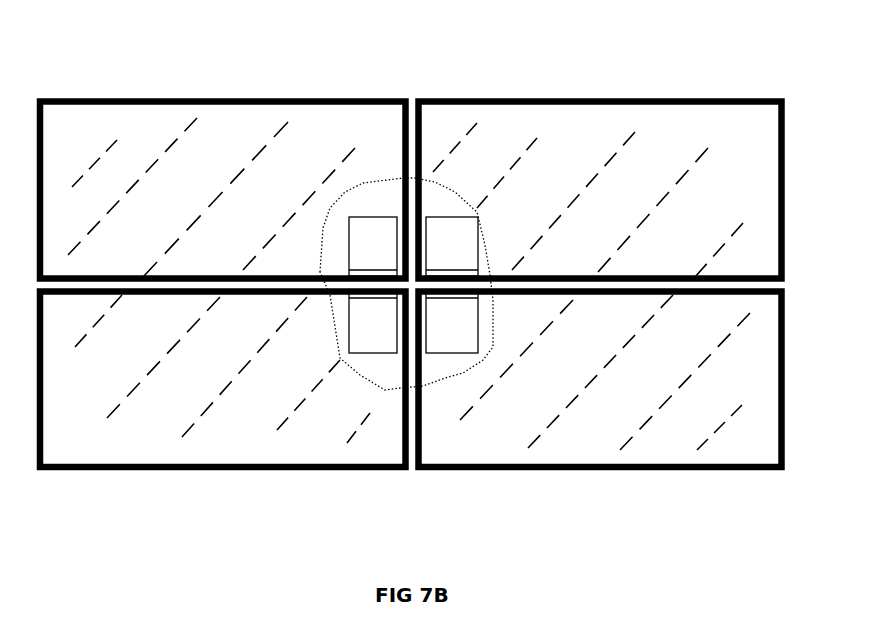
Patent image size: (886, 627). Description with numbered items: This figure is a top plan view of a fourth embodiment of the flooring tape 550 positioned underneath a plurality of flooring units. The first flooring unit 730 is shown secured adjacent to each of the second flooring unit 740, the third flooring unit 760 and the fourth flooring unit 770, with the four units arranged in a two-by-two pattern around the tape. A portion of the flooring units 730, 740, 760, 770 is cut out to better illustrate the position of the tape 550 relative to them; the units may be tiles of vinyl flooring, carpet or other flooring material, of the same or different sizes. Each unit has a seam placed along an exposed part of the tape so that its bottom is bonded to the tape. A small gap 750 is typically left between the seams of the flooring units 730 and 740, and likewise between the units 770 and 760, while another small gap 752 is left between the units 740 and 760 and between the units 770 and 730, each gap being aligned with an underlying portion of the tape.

The first flooring unit 730 is at (77, 163).
The second flooring unit 740 is at (743, 132).
The fourth flooring unit 770 is at (143, 437).
The third flooring unit 760 is at (667, 437).
The flooring tape 550 is at (457, 238).
The gap 750 is at (413, 467).
The gap 752 is at (785, 283).